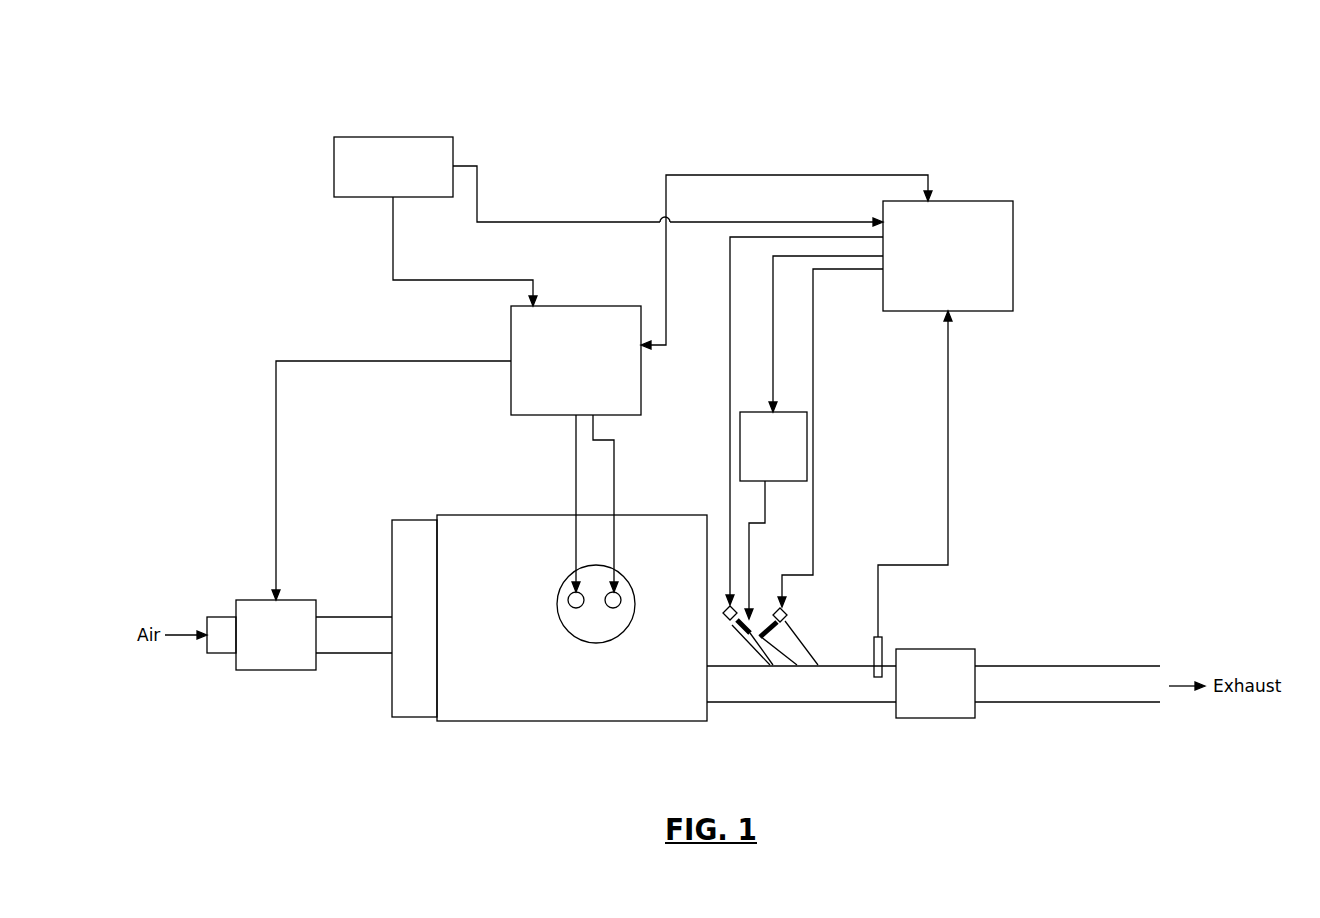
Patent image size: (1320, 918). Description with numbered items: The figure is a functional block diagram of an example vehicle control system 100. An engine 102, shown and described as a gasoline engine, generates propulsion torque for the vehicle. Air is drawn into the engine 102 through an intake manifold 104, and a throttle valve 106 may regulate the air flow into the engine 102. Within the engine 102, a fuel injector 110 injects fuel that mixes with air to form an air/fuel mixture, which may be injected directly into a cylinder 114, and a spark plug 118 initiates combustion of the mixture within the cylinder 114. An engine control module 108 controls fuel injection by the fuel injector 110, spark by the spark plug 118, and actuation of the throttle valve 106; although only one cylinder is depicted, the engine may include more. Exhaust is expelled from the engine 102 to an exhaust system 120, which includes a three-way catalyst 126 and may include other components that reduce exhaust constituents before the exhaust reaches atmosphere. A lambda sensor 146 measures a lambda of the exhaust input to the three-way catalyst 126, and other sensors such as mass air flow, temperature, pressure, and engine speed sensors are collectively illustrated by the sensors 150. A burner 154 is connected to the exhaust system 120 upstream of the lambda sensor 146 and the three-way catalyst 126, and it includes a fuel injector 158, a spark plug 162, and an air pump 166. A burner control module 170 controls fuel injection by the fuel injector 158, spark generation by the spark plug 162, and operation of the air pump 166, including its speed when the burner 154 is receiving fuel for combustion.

The vehicle control system 100 is at (228, 74).
The engine 102 is at (500, 515).
The intake manifold 104 is at (410, 520).
The throttle valve 106 is at (257, 600).
The engine control module 108 is at (577, 306).
The fuel injector 110 is at (570, 595).
The cylinder 114 is at (596, 643).
The spark plug 118 is at (613, 608).
The exhaust system 120 is at (1065, 801).
The three-way catalyst 126 is at (937, 649).
The lambda sensor 146 is at (874, 655).
The sensors 150 is at (398, 137).
The burner 154 is at (832, 422).
The fuel injector 158 is at (729, 622).
The spark plug 162 is at (790, 630).
The air pump 166 is at (788, 412).
The burner control module 170 is at (969, 201).